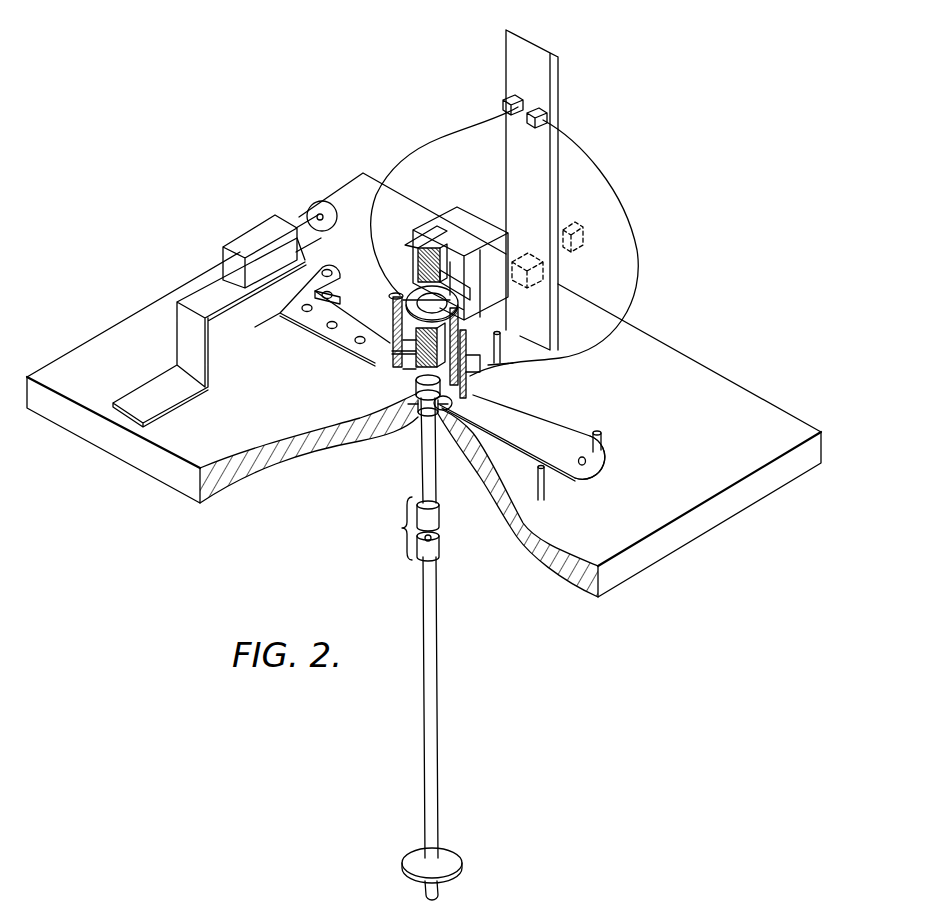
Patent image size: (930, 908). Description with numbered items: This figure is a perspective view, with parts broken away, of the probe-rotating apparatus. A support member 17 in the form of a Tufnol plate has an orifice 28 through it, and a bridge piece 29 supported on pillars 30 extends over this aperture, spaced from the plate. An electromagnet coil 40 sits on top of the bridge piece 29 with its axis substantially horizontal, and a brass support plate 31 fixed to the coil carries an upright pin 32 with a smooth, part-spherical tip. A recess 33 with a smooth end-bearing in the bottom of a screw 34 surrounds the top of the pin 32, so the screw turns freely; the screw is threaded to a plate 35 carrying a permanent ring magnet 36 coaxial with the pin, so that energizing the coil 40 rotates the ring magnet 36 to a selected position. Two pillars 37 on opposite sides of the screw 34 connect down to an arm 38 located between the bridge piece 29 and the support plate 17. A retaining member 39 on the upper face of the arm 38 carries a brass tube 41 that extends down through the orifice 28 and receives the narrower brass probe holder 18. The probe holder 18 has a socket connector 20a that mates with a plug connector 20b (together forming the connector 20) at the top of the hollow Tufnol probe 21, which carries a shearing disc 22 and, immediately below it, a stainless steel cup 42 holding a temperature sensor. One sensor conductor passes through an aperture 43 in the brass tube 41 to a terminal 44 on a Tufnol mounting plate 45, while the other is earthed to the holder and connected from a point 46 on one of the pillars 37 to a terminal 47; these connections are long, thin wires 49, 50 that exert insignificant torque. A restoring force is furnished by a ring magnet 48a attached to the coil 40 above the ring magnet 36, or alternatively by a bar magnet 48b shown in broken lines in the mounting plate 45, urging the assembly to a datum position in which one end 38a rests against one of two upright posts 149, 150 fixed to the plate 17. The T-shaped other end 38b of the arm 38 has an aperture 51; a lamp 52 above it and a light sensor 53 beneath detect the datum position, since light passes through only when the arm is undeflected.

The support member 17 is at (640, 565).
The probe holder 18 is at (428, 463).
The connector 20 is at (393, 528).
The socket connector 20a is at (440, 515).
The plug connector 20b is at (438, 556).
The probe 21 is at (436, 666).
The disc 22 is at (448, 855).
The orifice 28 is at (402, 420).
The bridge piece 29 is at (545, 332).
The pillars 30 is at (478, 358).
The support plate 31 is at (463, 293).
The pin 32 is at (501, 346).
The recess 33 is at (420, 345).
The screw 34 is at (398, 352).
The plate 35 is at (398, 316).
The ring magnet 36 is at (396, 297).
The pillars 37 is at (392, 345).
The arm 38 is at (550, 435).
The end 38a is at (600, 465).
The other end 38b is at (237, 320).
The retaining member 39 is at (420, 378).
The electromagnet coil 40 is at (468, 232).
The brass tube 41 is at (416, 418).
The cup 42 is at (440, 897).
The aperture 43 is at (480, 450).
The terminal 44 is at (540, 112).
The mounting plate 45 is at (545, 172).
The point 46 is at (391, 300).
The terminal 47 is at (514, 104).
The ring magnet 48a is at (430, 248).
The bar magnet 48b is at (572, 235).
The wire 49 is at (443, 134).
The wire 50 is at (640, 260).
The aperture 51 is at (328, 268).
The lamp 52 is at (316, 210).
The light sensor 53 is at (332, 292).
The upright post 149 is at (545, 487).
The upright post 150 is at (602, 440).